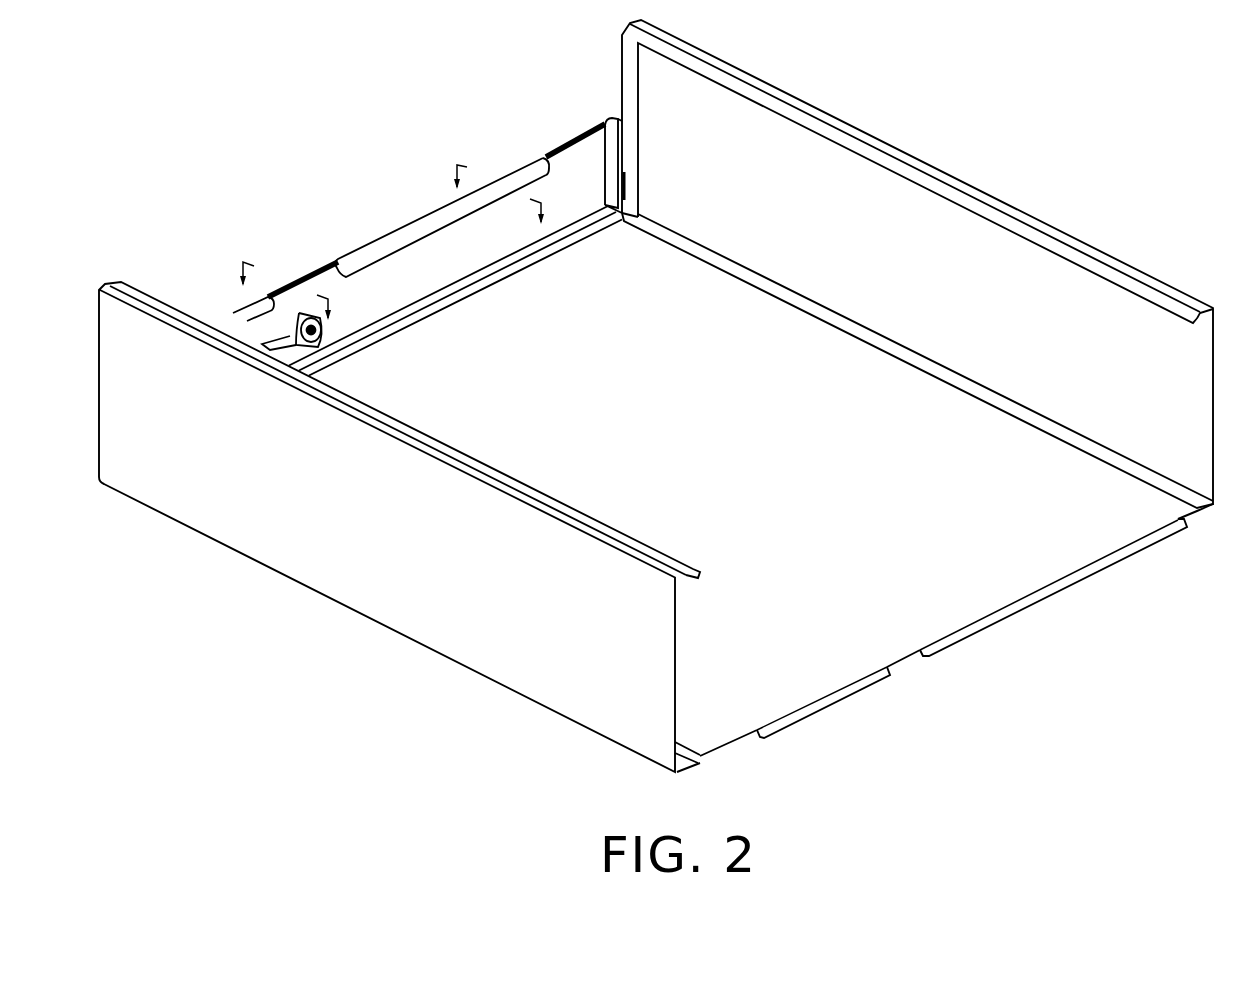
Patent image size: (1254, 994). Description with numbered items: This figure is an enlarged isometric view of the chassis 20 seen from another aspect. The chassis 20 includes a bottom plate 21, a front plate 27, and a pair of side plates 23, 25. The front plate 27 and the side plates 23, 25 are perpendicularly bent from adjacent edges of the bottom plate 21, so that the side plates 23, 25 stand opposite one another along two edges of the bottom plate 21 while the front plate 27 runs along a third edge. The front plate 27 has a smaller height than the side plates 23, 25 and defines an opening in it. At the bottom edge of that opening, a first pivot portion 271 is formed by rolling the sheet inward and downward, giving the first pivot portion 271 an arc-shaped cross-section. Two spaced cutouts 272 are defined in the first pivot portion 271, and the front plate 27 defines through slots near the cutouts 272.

The chassis 20 is at (1028, 140).
The bottom plate 21 is at (962, 590).
The side plate 23 is at (435, 597).
The side plate 25 is at (812, 156).
The front plate 27 is at (478, 242).
The first pivot portion 271 is at (520, 177).
The cutouts 272 is at (313, 283).